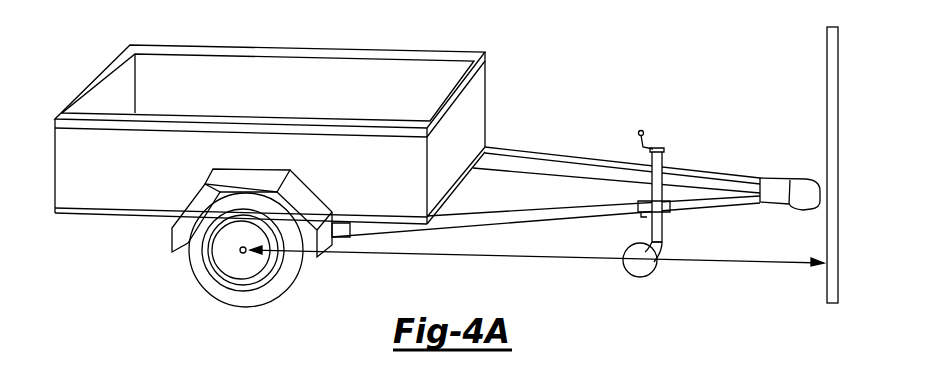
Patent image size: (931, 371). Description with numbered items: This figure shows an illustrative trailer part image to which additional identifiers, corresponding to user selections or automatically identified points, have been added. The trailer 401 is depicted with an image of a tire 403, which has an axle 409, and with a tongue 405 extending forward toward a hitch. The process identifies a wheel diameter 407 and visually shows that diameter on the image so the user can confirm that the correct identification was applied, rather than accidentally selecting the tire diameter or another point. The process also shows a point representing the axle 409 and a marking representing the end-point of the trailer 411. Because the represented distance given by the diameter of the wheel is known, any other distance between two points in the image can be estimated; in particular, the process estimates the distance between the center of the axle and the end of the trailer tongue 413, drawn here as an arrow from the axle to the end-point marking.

The trailer 401 is at (96, 197).
The tire 403 is at (210, 275).
The tongue 405 is at (790, 182).
The wheel diameter 407 is at (267, 280).
The axle 409 is at (232, 253).
The end-point of the trailer 411 is at (828, 290).
The distance between the center of the axle and the end of the trailer tongue 413 is at (710, 264).